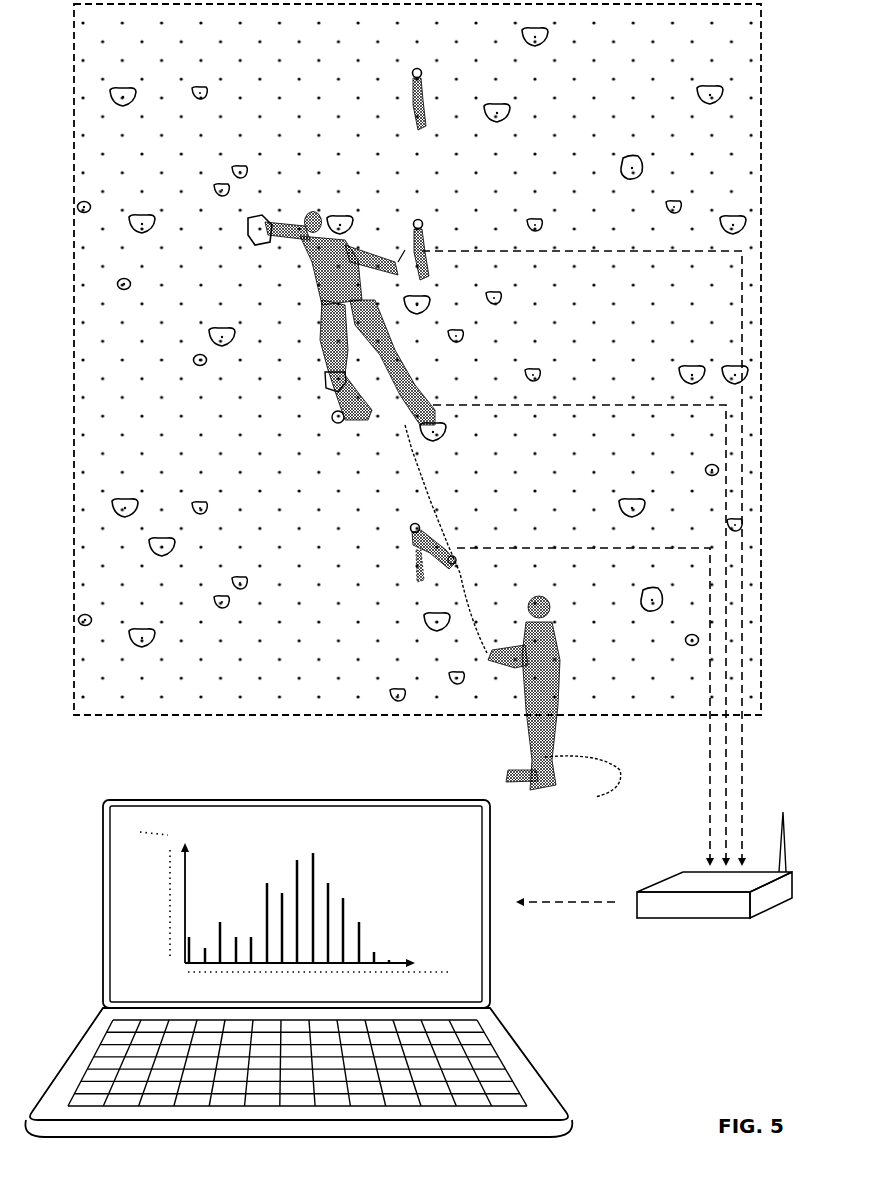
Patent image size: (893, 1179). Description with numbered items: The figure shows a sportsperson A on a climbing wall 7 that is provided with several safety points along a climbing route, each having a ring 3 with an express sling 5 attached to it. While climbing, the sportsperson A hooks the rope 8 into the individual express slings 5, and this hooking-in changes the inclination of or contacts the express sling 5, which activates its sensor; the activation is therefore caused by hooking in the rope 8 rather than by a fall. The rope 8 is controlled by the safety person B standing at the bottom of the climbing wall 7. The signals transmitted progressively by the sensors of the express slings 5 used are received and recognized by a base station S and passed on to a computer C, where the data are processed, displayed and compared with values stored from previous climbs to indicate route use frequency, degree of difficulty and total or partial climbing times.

The ring 3 is at (421, 73).
The express sling 5 is at (424, 93).
The climbing wall 7 is at (113, 313).
The rope 8 is at (400, 312).
The sportsperson A is at (340, 290).
The safety person B is at (548, 632).
The computer C is at (453, 950).
The base station S is at (693, 905).